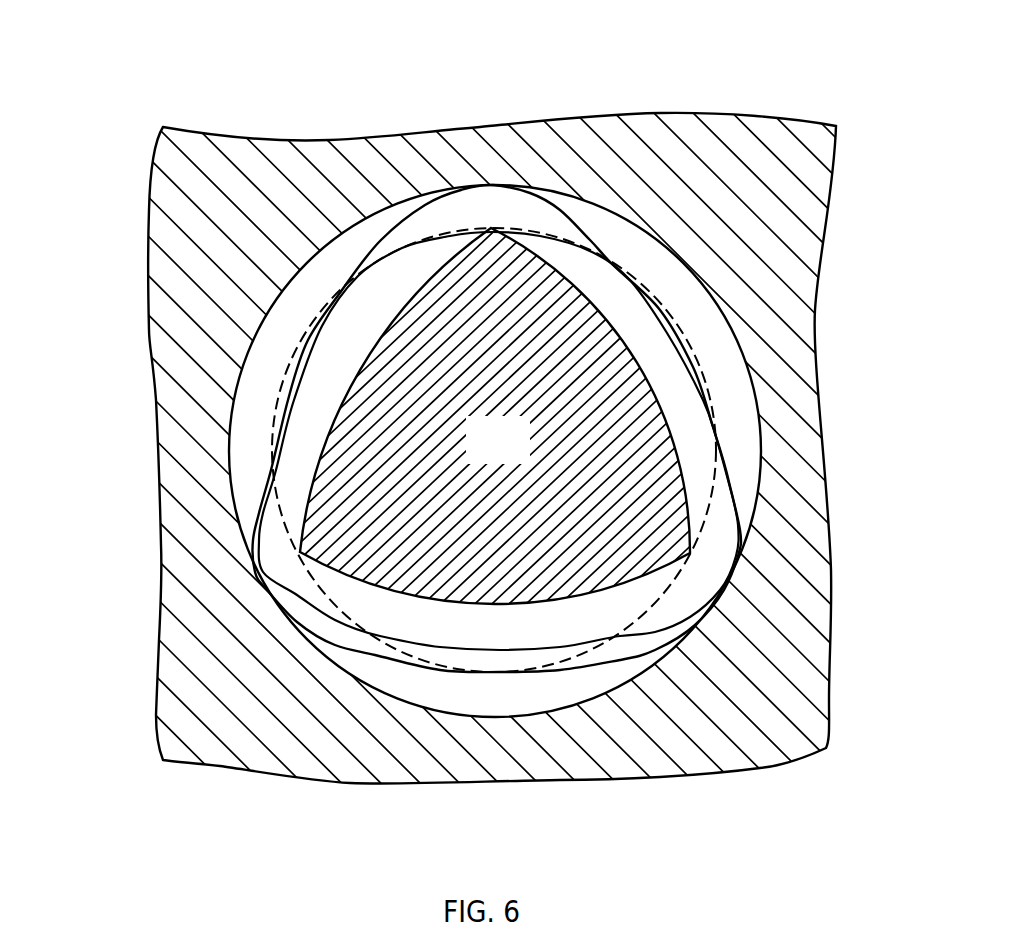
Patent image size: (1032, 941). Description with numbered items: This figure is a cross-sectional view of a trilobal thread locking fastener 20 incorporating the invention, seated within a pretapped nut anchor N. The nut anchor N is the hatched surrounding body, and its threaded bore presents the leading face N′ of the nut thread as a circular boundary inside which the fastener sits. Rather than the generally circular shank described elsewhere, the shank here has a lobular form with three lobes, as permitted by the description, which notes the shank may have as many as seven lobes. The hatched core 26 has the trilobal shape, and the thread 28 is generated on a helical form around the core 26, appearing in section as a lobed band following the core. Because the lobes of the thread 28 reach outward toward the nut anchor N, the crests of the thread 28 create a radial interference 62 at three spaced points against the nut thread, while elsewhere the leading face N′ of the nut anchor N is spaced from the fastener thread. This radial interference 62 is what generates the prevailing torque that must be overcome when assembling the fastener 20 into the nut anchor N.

The nut anchor N is at (148, 260).
The leading face of the nut anchor thread N′ is at (252, 370).
The thread locking fastener 20 is at (714, 433).
The core 26 is at (514, 451).
The thread 28 is at (263, 513).
The radial interference 62 is at (494, 184).